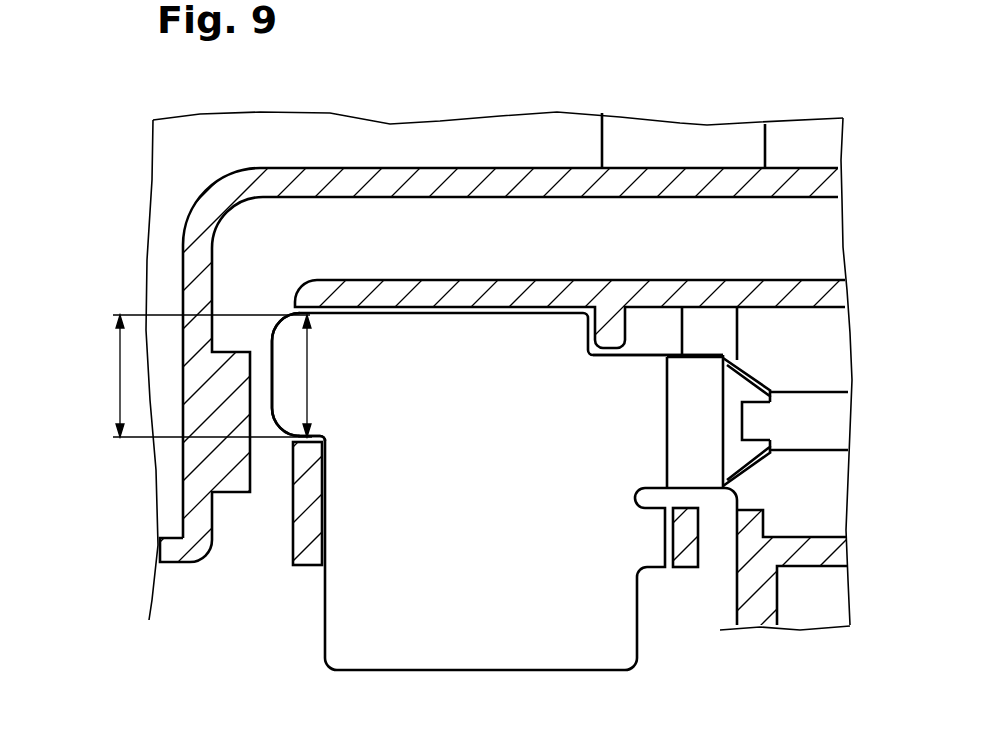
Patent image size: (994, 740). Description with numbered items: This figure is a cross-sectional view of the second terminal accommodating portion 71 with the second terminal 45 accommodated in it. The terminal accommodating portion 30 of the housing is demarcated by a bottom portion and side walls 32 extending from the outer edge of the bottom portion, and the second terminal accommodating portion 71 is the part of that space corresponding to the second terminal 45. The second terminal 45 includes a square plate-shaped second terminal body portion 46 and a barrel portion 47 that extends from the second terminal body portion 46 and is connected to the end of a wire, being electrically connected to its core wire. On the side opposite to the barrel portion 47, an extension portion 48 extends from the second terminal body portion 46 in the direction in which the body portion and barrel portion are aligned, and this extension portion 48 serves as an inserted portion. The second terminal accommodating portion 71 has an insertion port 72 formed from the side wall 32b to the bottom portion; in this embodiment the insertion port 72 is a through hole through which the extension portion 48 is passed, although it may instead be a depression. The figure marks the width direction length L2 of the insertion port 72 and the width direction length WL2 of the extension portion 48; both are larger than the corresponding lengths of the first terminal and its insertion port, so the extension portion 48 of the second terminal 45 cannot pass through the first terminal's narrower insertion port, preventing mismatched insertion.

The terminal accommodating portion 30 is at (497, 370).
The side wall 32 is at (541, 292).
The side wall 32b is at (306, 556).
The second terminal 45 is at (640, 356).
The second terminal body portion 46 is at (549, 455).
The barrel portion 47 is at (802, 402).
The extension portion 48 is at (286, 333).
The second terminal accommodating portion 71 is at (497, 370).
The insertion port 72 is at (310, 436).
The width direction length of the insertion port L2 is at (308, 378).
The width direction length of the extension portion WL2 is at (118, 378).